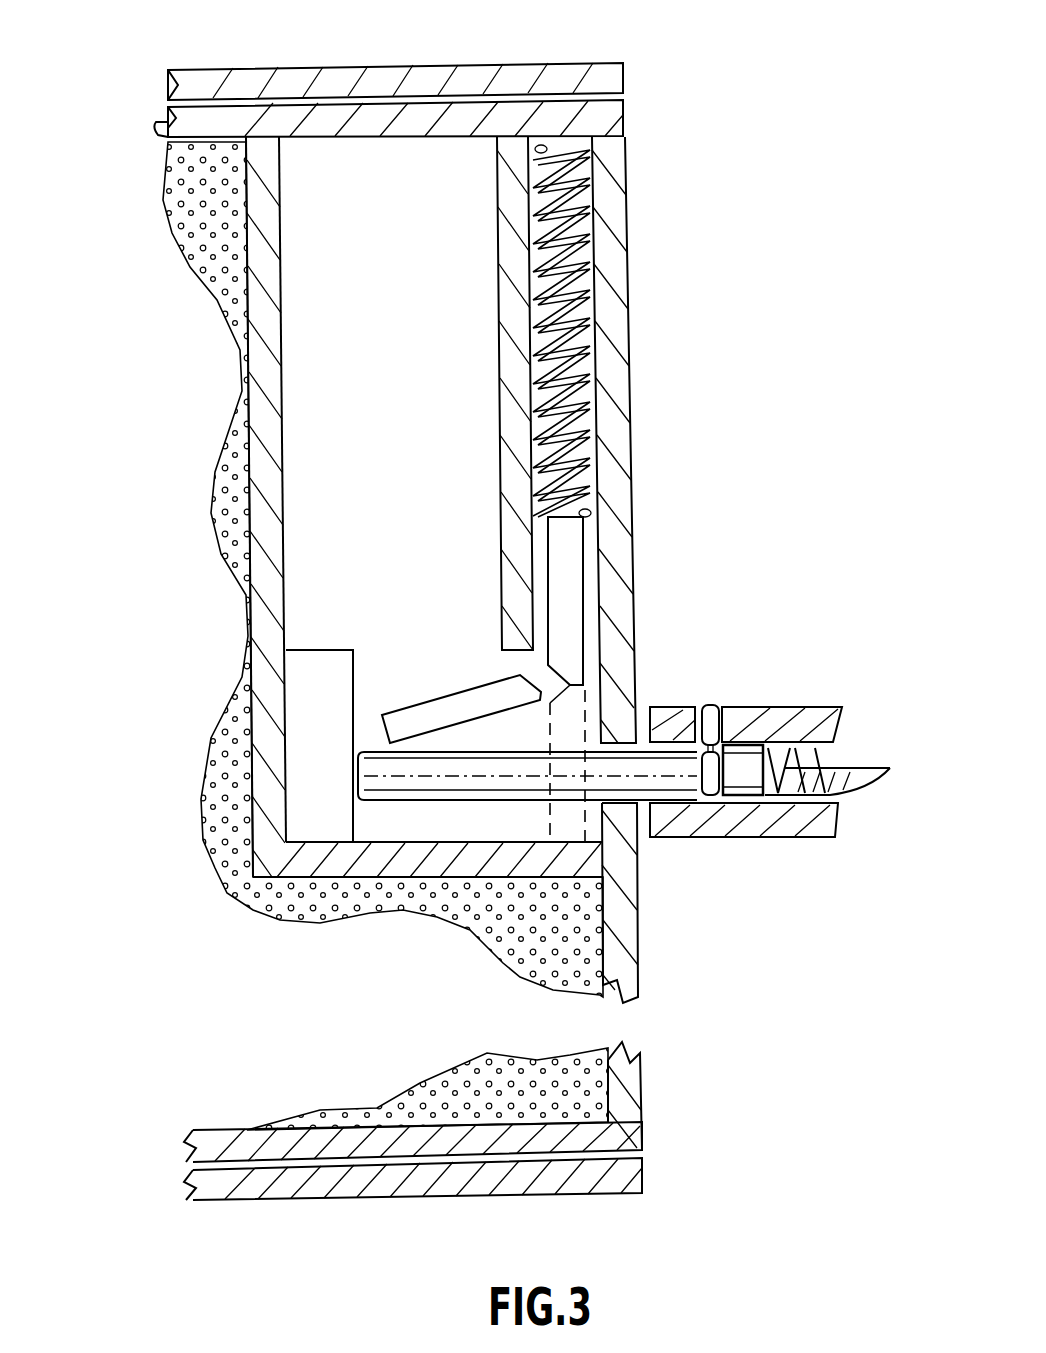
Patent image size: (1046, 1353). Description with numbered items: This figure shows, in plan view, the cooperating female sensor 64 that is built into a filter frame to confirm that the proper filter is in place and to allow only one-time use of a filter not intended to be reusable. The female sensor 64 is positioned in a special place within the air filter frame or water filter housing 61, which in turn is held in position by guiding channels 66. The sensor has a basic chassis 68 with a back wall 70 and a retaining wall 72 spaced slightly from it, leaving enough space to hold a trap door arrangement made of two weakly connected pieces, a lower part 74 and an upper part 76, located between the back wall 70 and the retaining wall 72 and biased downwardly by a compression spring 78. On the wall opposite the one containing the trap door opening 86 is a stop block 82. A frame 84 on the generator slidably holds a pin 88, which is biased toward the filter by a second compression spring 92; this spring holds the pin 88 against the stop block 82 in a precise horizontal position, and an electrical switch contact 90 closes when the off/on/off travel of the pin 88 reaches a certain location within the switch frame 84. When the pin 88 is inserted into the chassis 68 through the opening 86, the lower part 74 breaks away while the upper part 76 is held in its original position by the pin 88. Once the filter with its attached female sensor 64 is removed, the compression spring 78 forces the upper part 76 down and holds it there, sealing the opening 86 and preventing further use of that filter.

The air filter frame or water filter housing 61 is at (623, 938).
The cooperating female sensor 64 is at (175, 100).
The guiding channels 66 is at (238, 80).
The basic chassis 68 is at (252, 218).
The back wall 70 is at (620, 527).
The retaining wall 72 is at (727, 309).
The lower part of trap door 74 is at (507, 690).
The upper part of trap door 76 is at (565, 545).
The compression spring 78 is at (709, 358).
The stop block 82 is at (330, 668).
The frame 84 is at (740, 722).
The trap door opening 86 is at (610, 740).
The pin 88 is at (418, 768).
The electrical switch contact 90 is at (715, 703).
The compression spring 92 is at (803, 742).